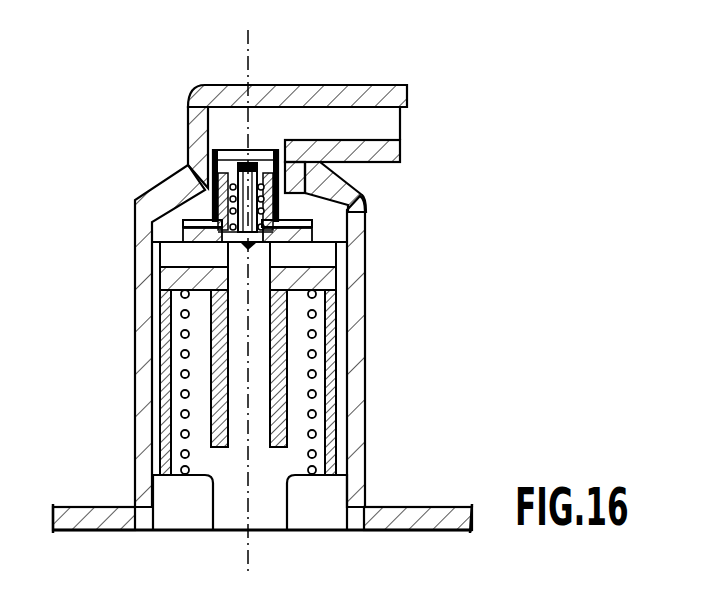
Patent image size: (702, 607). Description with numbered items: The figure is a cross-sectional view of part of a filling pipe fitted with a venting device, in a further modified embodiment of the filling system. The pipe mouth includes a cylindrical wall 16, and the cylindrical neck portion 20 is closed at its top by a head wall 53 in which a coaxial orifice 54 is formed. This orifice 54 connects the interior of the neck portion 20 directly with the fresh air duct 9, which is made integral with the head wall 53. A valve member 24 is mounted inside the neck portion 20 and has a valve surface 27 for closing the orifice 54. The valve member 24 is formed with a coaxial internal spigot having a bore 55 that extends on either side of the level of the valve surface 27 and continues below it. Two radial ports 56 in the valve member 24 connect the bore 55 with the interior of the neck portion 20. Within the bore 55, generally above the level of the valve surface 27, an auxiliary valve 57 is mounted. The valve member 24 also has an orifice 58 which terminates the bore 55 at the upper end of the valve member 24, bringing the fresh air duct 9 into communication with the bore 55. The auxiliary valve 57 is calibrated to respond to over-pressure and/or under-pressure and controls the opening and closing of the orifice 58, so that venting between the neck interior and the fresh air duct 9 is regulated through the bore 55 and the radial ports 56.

The fresh air duct 9 is at (390, 92).
The cylindrical wall 16 is at (433, 507).
The neck portion 20 is at (364, 350).
The valve member 24 is at (336, 300).
The valve surface 27 is at (350, 192).
The head wall 53 is at (153, 190).
The coaxial orifice 54 is at (213, 128).
The bore 55 is at (237, 420).
The radial ports 56 is at (183, 255).
The auxiliary valve 57 is at (263, 132).
The orifice 58 is at (262, 165).